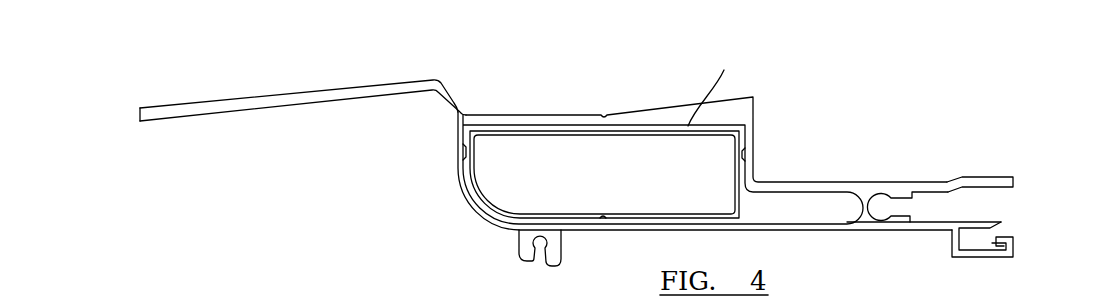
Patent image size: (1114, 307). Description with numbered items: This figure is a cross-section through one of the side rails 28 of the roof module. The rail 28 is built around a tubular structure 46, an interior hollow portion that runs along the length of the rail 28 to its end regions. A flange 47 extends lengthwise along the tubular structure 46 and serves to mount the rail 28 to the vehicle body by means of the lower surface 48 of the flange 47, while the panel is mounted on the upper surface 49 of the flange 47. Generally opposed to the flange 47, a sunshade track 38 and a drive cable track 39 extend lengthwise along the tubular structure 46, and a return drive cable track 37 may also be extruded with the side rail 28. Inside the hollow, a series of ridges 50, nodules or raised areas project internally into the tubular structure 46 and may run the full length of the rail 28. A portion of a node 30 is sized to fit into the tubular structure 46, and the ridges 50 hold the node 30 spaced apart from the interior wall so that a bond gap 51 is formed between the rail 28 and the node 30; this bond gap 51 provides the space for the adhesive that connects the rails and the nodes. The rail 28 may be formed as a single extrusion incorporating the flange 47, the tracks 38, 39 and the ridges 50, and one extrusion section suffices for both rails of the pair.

The side rail 28 is at (838, 130).
The node 30 is at (537, 163).
The return drive cable track 37 is at (553, 259).
The sunshade track 38 is at (977, 247).
The drive cable track 39 is at (1002, 177).
The tubular structure 46 is at (770, 191).
The flange 47 is at (303, 111).
The lower surface 48 is at (225, 113).
The upper surface 49 is at (197, 103).
The ridges 50 is at (606, 118).
The bond gap 51 is at (553, 128).